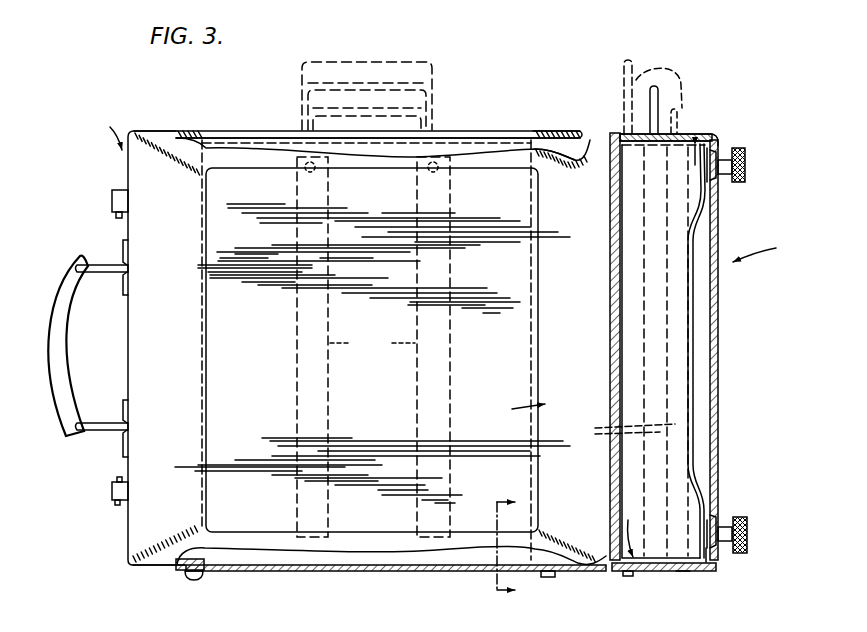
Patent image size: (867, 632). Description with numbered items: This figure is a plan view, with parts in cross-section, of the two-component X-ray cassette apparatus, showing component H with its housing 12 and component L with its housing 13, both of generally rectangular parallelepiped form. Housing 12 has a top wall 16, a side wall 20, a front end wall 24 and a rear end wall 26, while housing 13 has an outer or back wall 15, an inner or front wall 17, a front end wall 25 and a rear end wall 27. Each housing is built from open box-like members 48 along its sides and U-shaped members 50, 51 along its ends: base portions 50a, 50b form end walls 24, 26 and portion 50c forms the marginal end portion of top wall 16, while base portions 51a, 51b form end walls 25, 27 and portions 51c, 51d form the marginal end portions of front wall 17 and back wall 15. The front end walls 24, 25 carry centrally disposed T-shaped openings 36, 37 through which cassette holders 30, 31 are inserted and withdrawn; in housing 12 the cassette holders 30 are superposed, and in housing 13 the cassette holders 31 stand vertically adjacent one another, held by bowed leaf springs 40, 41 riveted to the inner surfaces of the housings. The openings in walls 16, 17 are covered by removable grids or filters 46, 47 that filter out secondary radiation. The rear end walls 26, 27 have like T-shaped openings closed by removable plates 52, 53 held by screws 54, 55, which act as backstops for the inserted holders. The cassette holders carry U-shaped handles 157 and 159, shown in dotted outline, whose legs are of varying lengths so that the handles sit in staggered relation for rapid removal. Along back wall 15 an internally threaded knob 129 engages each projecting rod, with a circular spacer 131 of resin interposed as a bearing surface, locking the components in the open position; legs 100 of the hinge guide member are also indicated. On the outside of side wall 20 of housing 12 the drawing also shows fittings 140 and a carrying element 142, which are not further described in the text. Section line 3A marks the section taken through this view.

The housing 12 is at (147, 538).
The housing 13 is at (708, 409).
The outer or back wall 15 is at (720, 306).
The top wall 16 is at (258, 432).
The inner or front wall 17 is at (611, 342).
The side wall 20 is at (125, 466).
The front end wall 24 is at (549, 130).
The front end wall 25 is at (710, 134).
The end wall 26 is at (178, 569).
The end wall 27 is at (722, 575).
The cassette holder 30 is at (473, 143).
The cassette holder 31 is at (620, 432).
The T-shaped opening 36 is at (233, 132).
The T-shaped opening 37 is at (690, 133).
The bowed leaf spring 40 is at (372, 344).
The bowed leaf spring 41 is at (695, 347).
The grid or filter 46 is at (218, 214).
The grid or filter 47 is at (612, 235).
The open box-like member 48 is at (108, 384).
The U-shaped member 50 is at (170, 131).
The base portion 50a is at (580, 122).
The base portion 50b is at (205, 531).
The portion of U-shaped member 50c is at (340, 160).
The U-shaped member 51 is at (718, 196).
The base portion 51a is at (622, 132).
The base portion 51b is at (713, 522).
The portion of U-shaped member 51c is at (607, 163).
The portion of U-shaped member 51d is at (722, 153).
The removable plate 52 is at (318, 571).
The removable plate 53 is at (684, 573).
The screw 54 is at (196, 580).
The screw 55 is at (629, 578).
The leg 100 is at (374, 620).
The internally threaded knob 129 is at (746, 168).
The circular spacer 131 is at (745, 200).
The latch 140 is at (118, 192).
The carrying handle 142 is at (72, 280).
The U-shaped handle member 157 is at (378, 102).
The handle 159 is at (641, 88).
The section line 3A is at (502, 543).